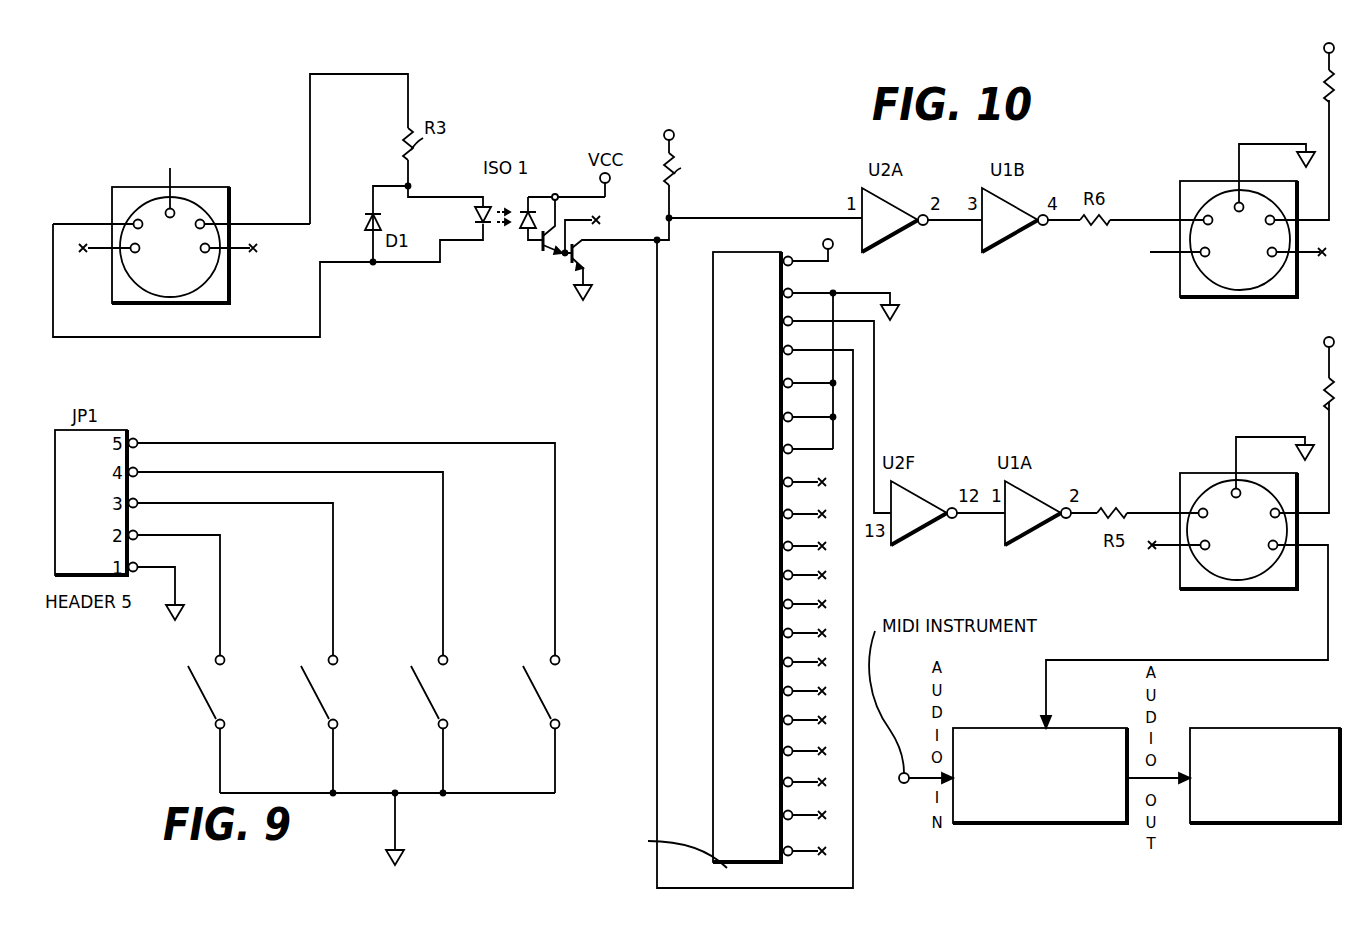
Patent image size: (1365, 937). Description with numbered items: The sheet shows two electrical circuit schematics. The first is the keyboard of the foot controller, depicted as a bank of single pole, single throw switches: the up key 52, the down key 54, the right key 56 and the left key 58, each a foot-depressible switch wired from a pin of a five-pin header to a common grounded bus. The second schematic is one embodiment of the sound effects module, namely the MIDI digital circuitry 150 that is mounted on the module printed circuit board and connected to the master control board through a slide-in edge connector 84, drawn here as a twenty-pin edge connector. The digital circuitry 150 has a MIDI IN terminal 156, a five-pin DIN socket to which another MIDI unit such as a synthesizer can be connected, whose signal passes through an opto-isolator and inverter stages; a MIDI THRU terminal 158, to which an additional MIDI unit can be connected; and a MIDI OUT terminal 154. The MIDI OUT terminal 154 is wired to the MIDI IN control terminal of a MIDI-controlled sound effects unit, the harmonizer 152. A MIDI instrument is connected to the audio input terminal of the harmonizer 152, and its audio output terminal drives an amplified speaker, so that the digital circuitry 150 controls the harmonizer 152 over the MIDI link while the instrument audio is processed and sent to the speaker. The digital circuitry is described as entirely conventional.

In FIG. 10, the MIDI IN terminal 156 is at (217, 192).
In FIG. 10, the MIDI digital circuitry 150 is at (761, 146).
In FIG. 10, the slide-in edge connector 84 is at (720, 297).
In FIG. 10, the MIDI THRU terminal 158 is at (1197, 185).
In FIG. 10, the MIDI OUT terminal 154 is at (1180, 567).
In FIG. 10, the harmonizer 152 is at (1045, 823).
In FIG. 10, the up key 52 is at (1283, 735).
In FIG. 9, the up key 52 is at (538, 693).
In FIG. 9, the right key 56 is at (208, 705).
In FIG. 9, the left key 58 is at (318, 690).
In FIG. 9, the down key 54 is at (428, 693).